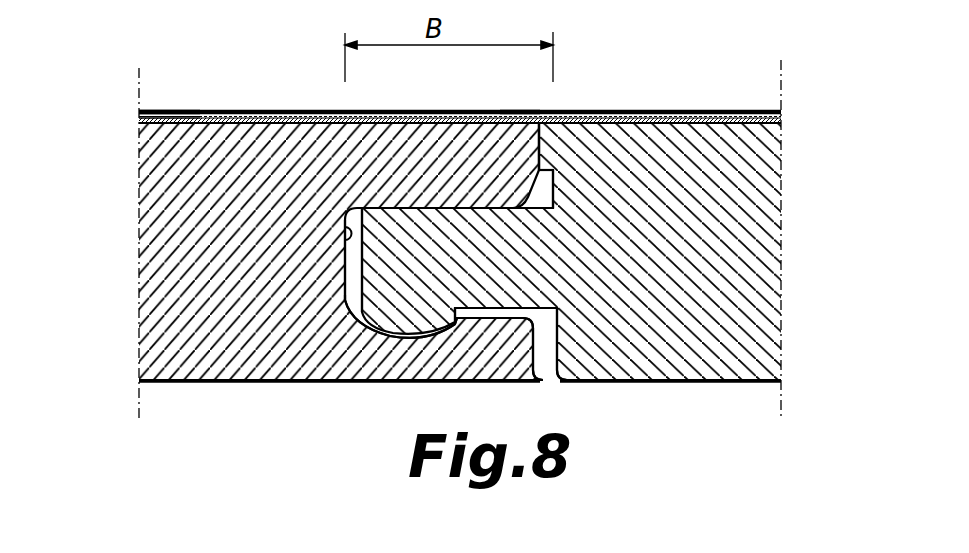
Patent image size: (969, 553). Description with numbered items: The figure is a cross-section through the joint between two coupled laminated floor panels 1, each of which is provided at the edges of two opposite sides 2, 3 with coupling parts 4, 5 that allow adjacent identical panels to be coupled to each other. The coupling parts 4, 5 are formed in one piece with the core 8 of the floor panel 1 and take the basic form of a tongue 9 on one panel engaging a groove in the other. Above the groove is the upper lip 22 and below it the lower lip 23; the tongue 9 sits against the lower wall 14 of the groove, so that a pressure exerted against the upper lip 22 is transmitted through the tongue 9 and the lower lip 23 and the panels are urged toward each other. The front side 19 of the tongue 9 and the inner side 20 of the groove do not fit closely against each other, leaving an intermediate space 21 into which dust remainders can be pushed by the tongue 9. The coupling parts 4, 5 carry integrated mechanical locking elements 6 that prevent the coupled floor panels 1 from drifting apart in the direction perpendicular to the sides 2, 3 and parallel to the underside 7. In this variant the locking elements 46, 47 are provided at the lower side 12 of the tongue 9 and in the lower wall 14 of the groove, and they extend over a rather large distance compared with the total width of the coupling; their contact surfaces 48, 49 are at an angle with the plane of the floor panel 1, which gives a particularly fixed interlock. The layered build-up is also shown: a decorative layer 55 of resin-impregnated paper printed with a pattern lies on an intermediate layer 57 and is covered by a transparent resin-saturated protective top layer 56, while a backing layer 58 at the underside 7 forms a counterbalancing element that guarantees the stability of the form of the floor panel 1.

The floor panel 1 is at (235, 414).
The side 2 is at (565, 108).
The side 3 is at (518, 108).
The coupling part 4 is at (606, 166).
The coupling part 5 is at (389, 160).
The locking element 6 is at (375, 346).
The underside 7 is at (296, 383).
The core 8 is at (160, 246).
The tongue 9 is at (365, 247).
The lower side of the tongue 12 is at (623, 381).
The lower wall of the groove 14 is at (458, 255).
The front side of the tongue 19 is at (340, 258).
The inner side of the groove 20 is at (344, 238).
The intermediate space 21 is at (352, 283).
The upper lip 22 is at (478, 148).
The lower lip 23 is at (405, 360).
The locking element 46 is at (345, 333).
The locking element 47 is at (537, 362).
The contact surface 48 is at (437, 322).
The contact surface 49 is at (458, 255).
The decorative layer 55 is at (137, 117).
The protective top layer 56 is at (139, 113).
The intermediate layer 57 is at (137, 121).
The backing layer 58 is at (139, 381).